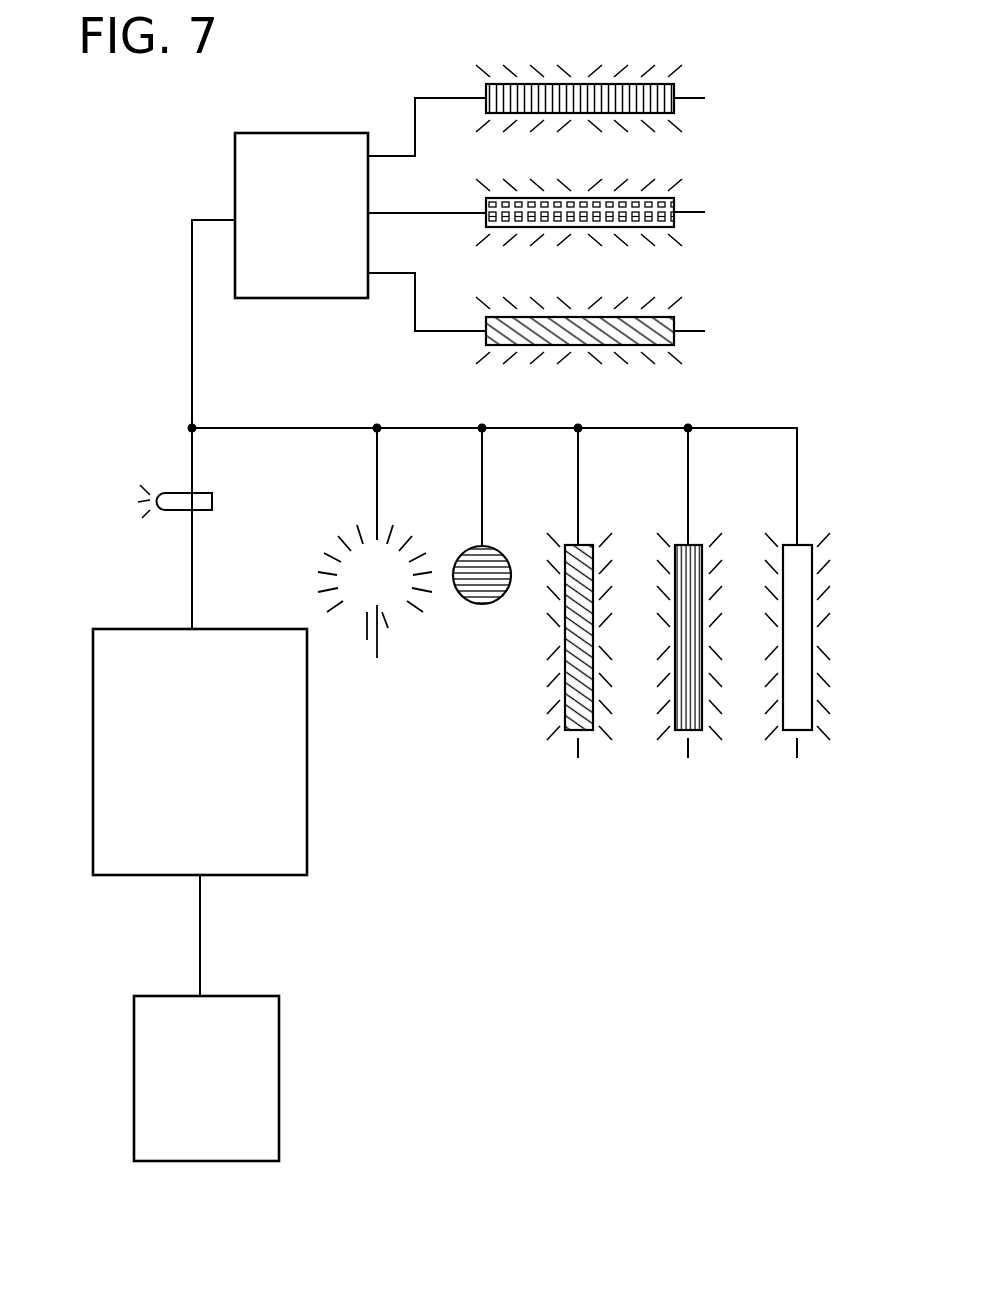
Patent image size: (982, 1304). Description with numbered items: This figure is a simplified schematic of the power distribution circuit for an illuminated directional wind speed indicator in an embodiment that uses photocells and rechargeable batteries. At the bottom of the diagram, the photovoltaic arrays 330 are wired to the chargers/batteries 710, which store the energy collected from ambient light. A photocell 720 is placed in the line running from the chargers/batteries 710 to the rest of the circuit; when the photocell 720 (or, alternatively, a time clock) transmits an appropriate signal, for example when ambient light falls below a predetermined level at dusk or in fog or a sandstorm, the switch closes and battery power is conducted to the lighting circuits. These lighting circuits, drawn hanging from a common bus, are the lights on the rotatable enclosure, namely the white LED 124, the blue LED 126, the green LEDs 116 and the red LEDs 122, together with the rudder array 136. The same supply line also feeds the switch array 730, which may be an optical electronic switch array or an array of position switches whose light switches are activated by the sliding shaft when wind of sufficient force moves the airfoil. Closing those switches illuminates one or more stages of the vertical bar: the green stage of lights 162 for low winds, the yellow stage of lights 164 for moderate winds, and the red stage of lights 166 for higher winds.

The switch array 730 is at (282, 234).
The chargers/batteries 710 is at (174, 772).
The photovoltaic arrays 330 is at (180, 1096).
The photocell 720 is at (150, 498).
The red stage of lights 166 is at (676, 91).
The yellow stage of lights 164 is at (676, 205).
The green stage of lights 162 is at (676, 325).
The white LED 124 is at (375, 613).
The blue LED 126 is at (476, 604).
The green LEDs 116 is at (567, 733).
The red LEDs 122 is at (678, 733).
The rudder array 136 is at (787, 733).